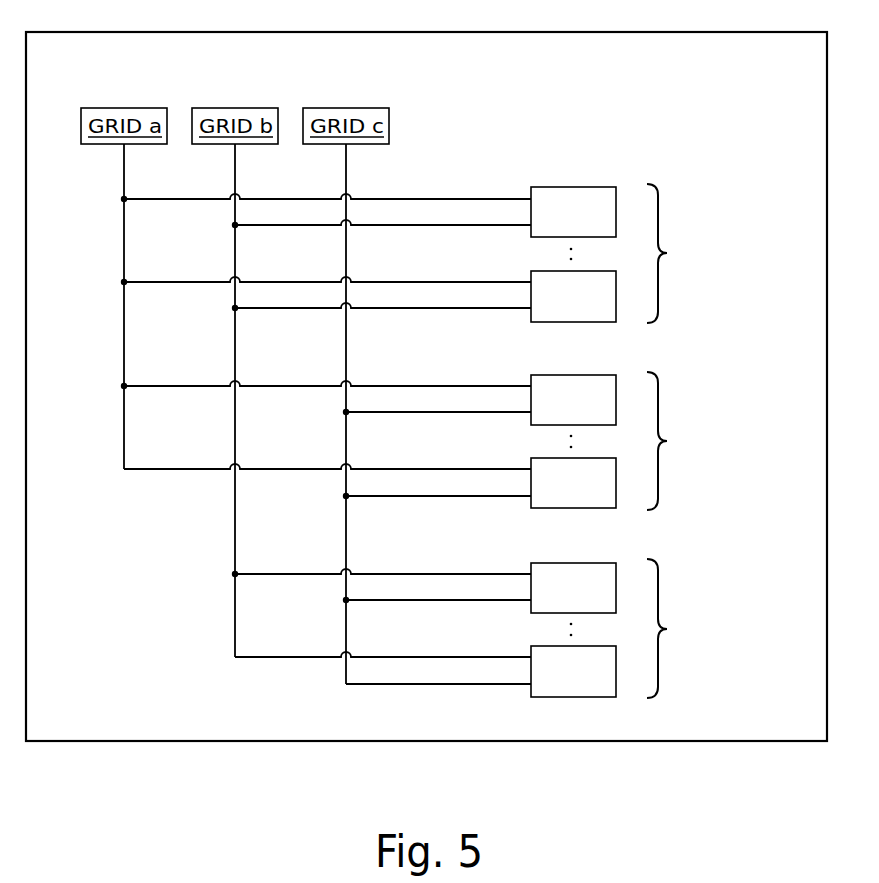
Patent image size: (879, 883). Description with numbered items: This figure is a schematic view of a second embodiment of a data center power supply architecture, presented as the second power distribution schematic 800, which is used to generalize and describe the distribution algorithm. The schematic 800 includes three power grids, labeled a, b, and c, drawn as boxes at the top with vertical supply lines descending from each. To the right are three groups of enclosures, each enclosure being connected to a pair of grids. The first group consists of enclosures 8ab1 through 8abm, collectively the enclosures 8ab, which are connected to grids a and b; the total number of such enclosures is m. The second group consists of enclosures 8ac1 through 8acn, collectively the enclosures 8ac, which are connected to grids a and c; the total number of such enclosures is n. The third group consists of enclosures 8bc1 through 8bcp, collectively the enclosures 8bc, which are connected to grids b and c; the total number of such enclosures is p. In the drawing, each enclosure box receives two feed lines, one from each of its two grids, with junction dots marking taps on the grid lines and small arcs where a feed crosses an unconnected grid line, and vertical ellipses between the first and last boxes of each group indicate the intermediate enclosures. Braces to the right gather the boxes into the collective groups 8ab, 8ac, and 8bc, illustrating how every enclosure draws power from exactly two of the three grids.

The second power distribution schematic 800 is at (820, 63).
The enclosures 8ab is at (623, 253).
The enclosures 8ac is at (623, 441).
The enclosures 8bc is at (623, 628).
The enclosure 8ab1 is at (597, 223).
The enclosure 8abm is at (600, 307).
The enclosure 8ac1 is at (597, 411).
The enclosure 8acn is at (597, 494).
The enclosure 8bc1 is at (597, 599).
The enclosure 8bcp is at (597, 682).